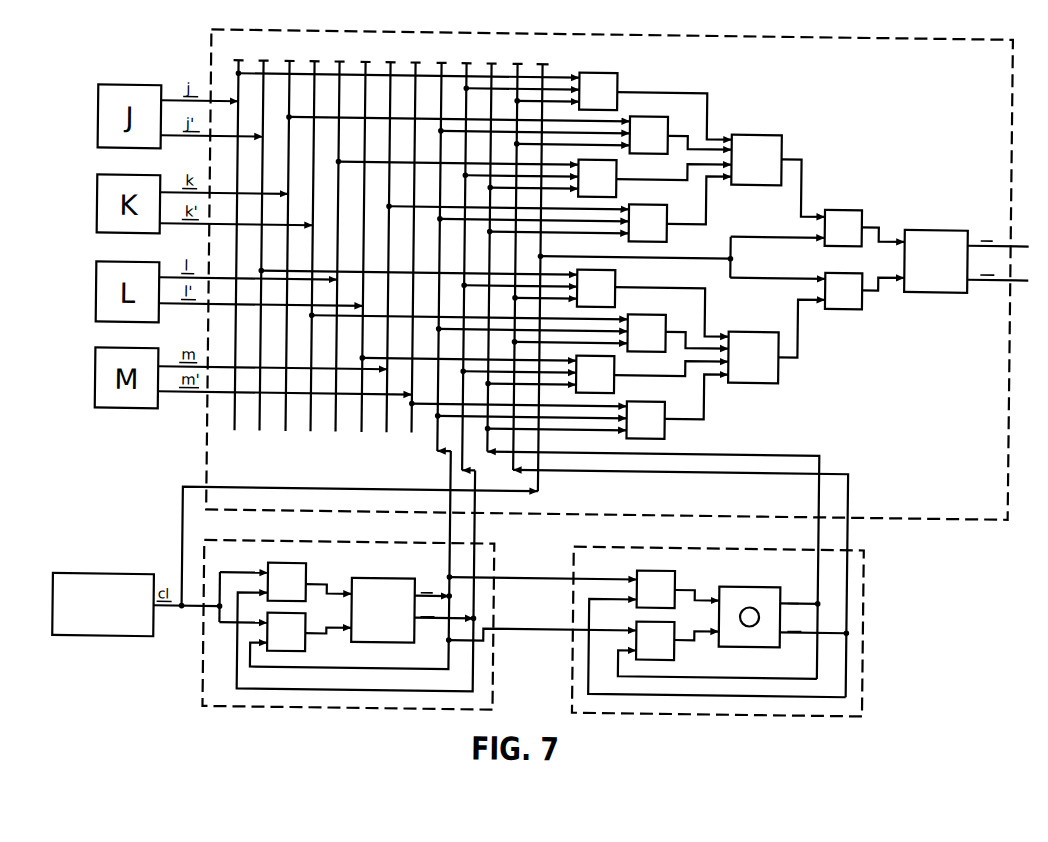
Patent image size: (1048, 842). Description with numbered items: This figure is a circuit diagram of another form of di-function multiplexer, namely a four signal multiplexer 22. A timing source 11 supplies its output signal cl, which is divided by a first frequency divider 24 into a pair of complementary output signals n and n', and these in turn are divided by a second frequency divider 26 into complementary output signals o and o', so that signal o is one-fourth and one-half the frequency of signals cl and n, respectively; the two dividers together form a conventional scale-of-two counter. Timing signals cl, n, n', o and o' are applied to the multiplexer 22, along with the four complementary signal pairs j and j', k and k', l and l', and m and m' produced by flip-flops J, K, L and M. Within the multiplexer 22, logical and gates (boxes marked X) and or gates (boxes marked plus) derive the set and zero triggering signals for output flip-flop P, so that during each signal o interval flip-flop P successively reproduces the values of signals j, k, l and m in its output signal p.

The timing source 11 is at (143, 643).
The four signal multiplexer 22 is at (943, 517).
The first frequency divider 24 is at (497, 672).
The second frequency divider 26 is at (866, 611).